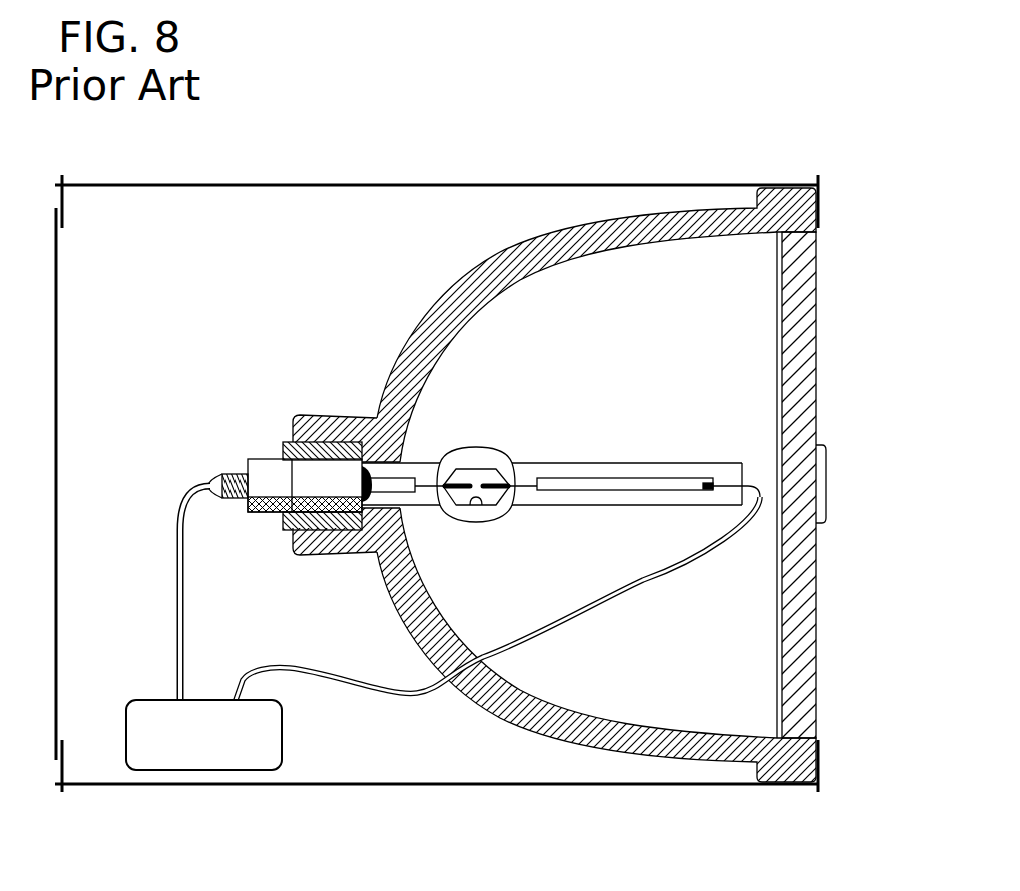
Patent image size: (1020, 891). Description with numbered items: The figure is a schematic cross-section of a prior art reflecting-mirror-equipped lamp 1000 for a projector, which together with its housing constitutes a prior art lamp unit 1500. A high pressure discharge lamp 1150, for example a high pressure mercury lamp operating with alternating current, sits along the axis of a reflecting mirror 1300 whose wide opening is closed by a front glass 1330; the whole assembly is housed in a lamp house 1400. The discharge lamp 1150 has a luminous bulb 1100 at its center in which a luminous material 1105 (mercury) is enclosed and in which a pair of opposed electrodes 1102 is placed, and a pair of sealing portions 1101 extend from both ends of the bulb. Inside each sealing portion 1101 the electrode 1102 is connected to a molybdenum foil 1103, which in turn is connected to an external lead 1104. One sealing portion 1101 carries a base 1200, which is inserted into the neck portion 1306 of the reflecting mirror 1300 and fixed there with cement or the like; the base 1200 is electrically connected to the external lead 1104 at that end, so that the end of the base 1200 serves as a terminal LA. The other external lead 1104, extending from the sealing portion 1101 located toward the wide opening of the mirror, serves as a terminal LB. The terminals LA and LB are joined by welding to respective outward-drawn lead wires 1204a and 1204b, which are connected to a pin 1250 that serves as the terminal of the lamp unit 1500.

The reflecting-mirror-equipped lamp 1000 is at (370, 311).
The luminous bulb 1100 is at (567, 476).
The sealing portion 1101 is at (618, 463).
The electrode 1102 is at (492, 490).
The molybdenum foil 1103 is at (628, 490).
The external lead 1104 is at (712, 483).
The luminous material 1105 is at (468, 506).
The high pressure discharge lamp 1150 is at (489, 434).
The base 1200 is at (280, 452).
The outward-drawn lead wire 1204a is at (177, 613).
The outward-drawn lead wire 1204b is at (360, 688).
The pin 1250 is at (204, 735).
The reflecting mirror 1300 is at (608, 256).
The neck portion 1306 is at (336, 404).
The front glass 1330 is at (812, 318).
The lamp house 1400 is at (560, 180).
The lamp unit 1500 is at (452, 808).
The terminal LA is at (224, 474).
The terminal LB is at (742, 477).